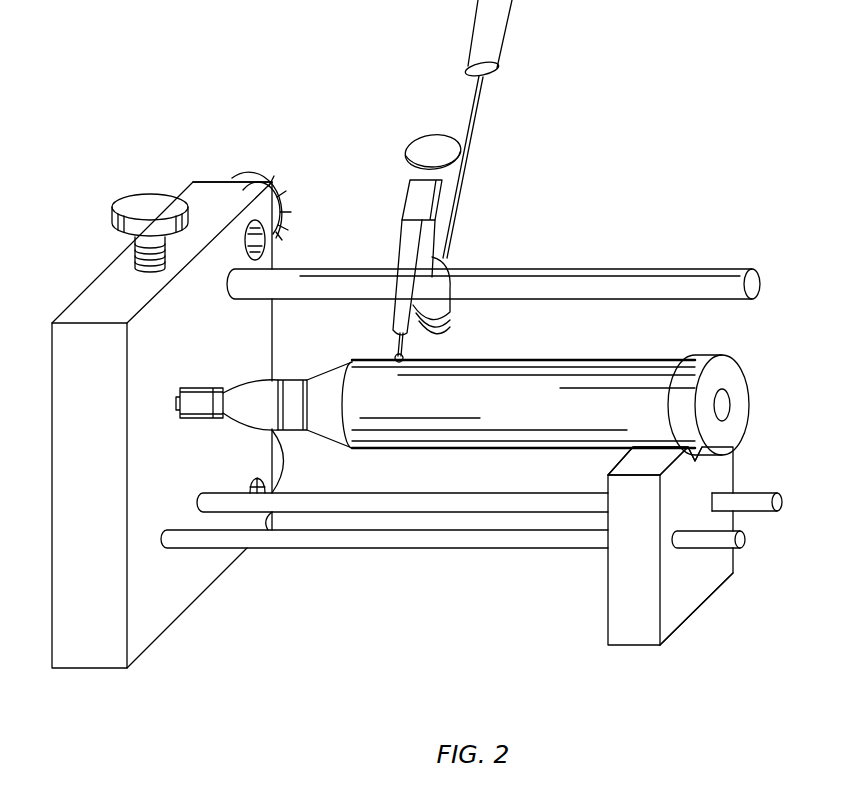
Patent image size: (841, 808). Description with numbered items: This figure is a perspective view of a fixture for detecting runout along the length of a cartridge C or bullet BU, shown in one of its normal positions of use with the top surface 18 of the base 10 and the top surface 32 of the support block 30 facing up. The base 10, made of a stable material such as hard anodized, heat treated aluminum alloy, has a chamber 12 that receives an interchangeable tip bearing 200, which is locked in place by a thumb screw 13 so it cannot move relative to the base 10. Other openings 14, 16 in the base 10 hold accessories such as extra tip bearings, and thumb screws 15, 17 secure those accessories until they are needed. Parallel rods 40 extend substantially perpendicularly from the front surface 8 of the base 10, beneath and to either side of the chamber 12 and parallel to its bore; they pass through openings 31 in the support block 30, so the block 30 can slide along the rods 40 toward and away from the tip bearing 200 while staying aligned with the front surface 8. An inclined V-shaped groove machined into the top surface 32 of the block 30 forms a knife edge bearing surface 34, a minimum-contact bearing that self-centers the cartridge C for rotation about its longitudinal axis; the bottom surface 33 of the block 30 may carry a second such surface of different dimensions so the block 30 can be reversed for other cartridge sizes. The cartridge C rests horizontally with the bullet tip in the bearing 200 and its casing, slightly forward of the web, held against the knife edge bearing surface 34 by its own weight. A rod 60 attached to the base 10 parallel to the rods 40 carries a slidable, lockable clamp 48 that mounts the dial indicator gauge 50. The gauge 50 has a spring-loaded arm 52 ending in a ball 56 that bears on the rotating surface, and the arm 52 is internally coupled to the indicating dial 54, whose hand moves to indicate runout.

The base 10 is at (151, 401).
The front surface 8 is at (118, 488).
The top surface 18 is at (205, 185).
The thumb screw 13 is at (155, 193).
The thumb screw 15 is at (255, 170).
The opening 14 is at (265, 242).
The rod 60 is at (645, 280).
The rods 40 is at (372, 540).
The thumb screw 17 is at (290, 458).
The opening 16 is at (256, 478).
The chamber 12 is at (214, 399).
The tip bearing 200 is at (208, 421).
The bullet BU is at (248, 390).
The nozzle ring N is at (302, 380).
The cartridge C is at (706, 345).
The support block 30 is at (695, 581).
The top surface 32 is at (625, 455).
The knife edge bearing surface 34 is at (698, 460).
The bottom surface 33 is at (681, 636).
The openings 31 is at (675, 530).
The dial indicator gauge 50 is at (419, 181).
The indicating dial 54 is at (425, 145).
The clamp 48 is at (450, 268).
The arm 52 is at (397, 352).
The ball 56 is at (404, 357).